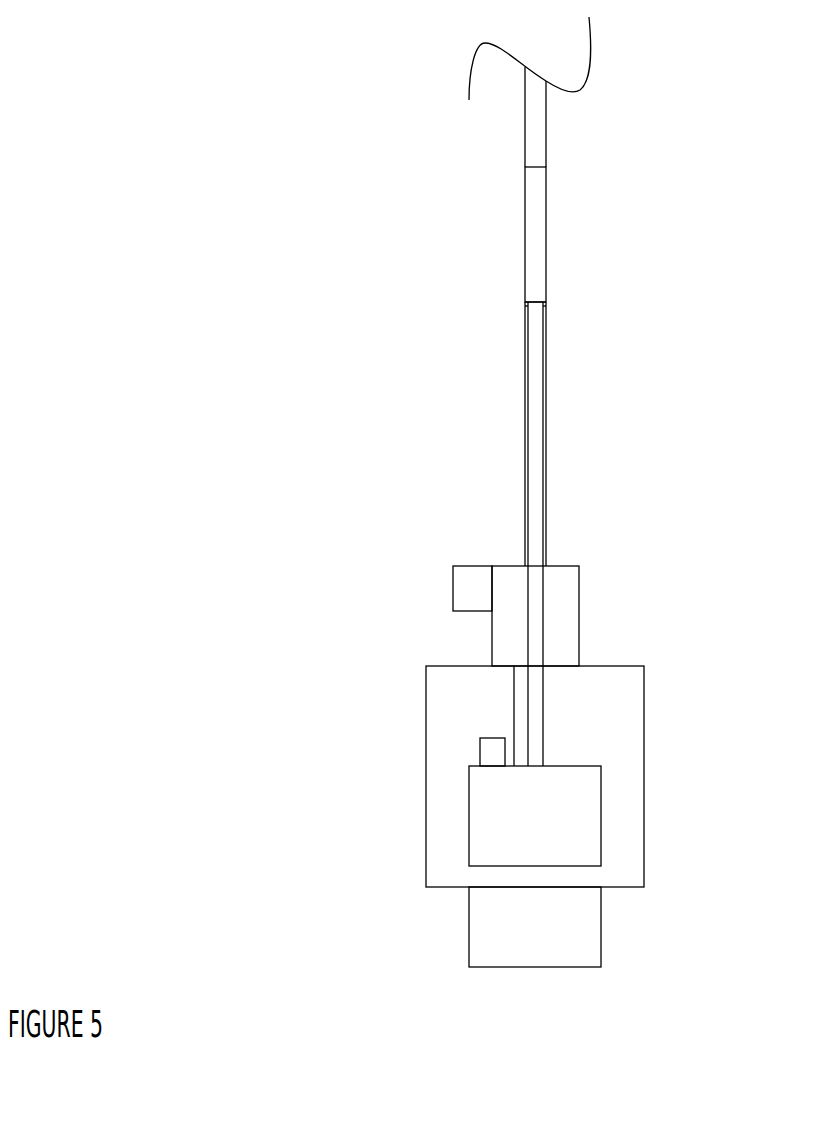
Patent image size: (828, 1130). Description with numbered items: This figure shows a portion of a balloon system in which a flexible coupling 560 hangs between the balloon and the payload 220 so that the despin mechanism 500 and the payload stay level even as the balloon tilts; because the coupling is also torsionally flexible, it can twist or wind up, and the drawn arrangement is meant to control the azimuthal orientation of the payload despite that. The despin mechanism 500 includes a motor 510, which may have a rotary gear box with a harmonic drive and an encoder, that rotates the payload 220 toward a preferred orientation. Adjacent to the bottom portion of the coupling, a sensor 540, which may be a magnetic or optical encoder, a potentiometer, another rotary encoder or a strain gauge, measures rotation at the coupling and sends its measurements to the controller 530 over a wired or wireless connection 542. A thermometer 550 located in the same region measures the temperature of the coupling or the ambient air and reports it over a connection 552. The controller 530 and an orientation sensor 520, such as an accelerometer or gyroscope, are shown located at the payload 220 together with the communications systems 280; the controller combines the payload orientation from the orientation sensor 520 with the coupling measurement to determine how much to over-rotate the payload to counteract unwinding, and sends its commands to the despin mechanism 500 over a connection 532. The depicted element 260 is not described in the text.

The sensor 540 is at (548, 308).
The flexible coupling 560 is at (524, 229).
The thermometer 550 is at (521, 309).
The wired or wireless connection 552 is at (527, 372).
The outer sheath 260 is at (523, 460).
The wired or wireless connection 542 is at (547, 515).
The despin mechanism 500 is at (580, 620).
The motor 510 is at (453, 593).
The payload 220 is at (645, 714).
The wired or wireless connection 532 is at (515, 722).
The orientation sensor 520 is at (478, 746).
The controller 530 is at (469, 813).
The communications systems 280 is at (603, 950).